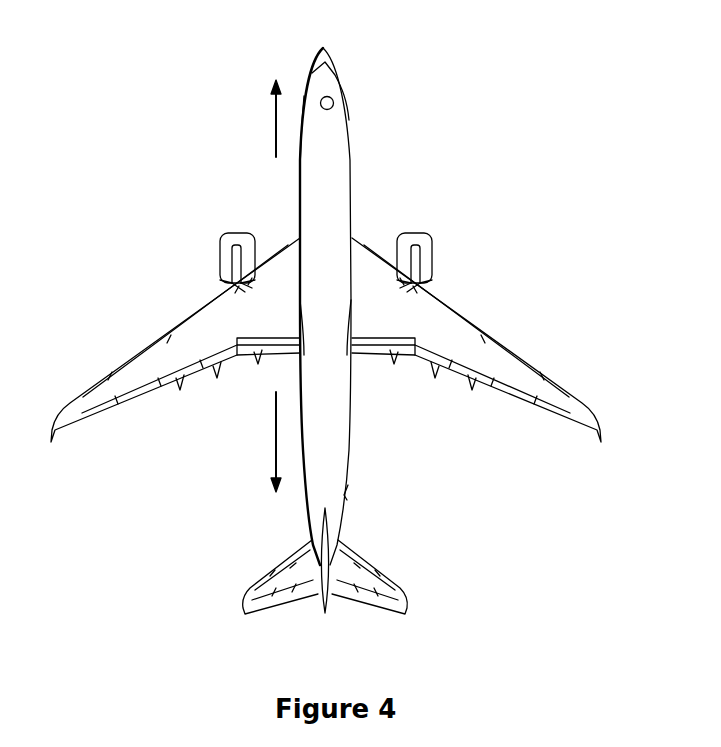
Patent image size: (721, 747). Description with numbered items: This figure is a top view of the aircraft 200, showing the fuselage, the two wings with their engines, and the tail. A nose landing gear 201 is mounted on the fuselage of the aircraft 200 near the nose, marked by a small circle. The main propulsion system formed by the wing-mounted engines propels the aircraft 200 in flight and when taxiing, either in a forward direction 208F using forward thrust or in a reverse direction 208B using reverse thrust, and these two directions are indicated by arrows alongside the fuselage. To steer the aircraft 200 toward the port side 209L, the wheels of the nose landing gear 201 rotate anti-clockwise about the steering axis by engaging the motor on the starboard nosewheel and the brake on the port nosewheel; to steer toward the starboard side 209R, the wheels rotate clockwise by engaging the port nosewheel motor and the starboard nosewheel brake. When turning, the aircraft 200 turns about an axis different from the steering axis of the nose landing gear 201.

The aircraft 200 is at (326, 313).
The nose landing gear 201 is at (334, 100).
The forward direction 208F is at (276, 130).
The reverse direction 208B is at (276, 420).
The port side direction 209L is at (222, 175).
The starboard side direction 209R is at (497, 175).